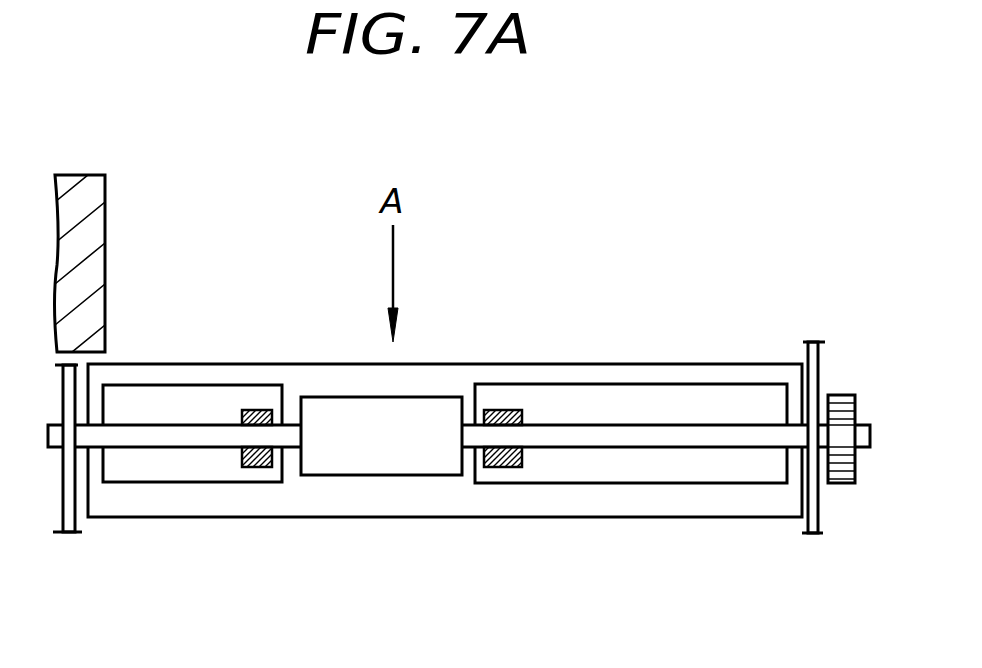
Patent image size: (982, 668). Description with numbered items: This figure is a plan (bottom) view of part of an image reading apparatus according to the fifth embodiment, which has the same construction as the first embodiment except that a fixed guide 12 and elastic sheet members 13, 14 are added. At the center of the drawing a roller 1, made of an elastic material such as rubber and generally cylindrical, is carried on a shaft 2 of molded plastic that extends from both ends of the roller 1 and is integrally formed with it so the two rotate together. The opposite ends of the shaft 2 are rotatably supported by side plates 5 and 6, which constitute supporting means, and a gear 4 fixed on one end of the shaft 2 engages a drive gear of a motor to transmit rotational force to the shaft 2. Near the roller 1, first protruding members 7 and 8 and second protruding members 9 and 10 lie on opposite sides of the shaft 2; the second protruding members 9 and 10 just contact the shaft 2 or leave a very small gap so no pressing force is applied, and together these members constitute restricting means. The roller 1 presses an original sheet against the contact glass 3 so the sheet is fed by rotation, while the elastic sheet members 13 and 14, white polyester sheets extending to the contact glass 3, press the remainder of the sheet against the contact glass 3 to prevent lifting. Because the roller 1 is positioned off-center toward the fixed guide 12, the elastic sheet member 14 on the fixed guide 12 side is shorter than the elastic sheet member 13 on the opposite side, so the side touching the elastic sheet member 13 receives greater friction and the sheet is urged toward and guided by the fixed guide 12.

The roller 1 is at (438, 408).
The shaft 2 is at (692, 433).
The contact glass 3 is at (387, 490).
The gear 4 is at (840, 395).
The side plate 5 is at (822, 370).
The side plate 6 is at (58, 488).
The first protruding member 7 is at (510, 410).
The first protruding member 8 is at (258, 410).
The second protruding member 9 is at (500, 467).
The second protruding member 10 is at (258, 467).
The fixed guide 12 is at (100, 228).
The elastic sheet member 13 is at (683, 468).
The elastic sheet member 14 is at (163, 473).